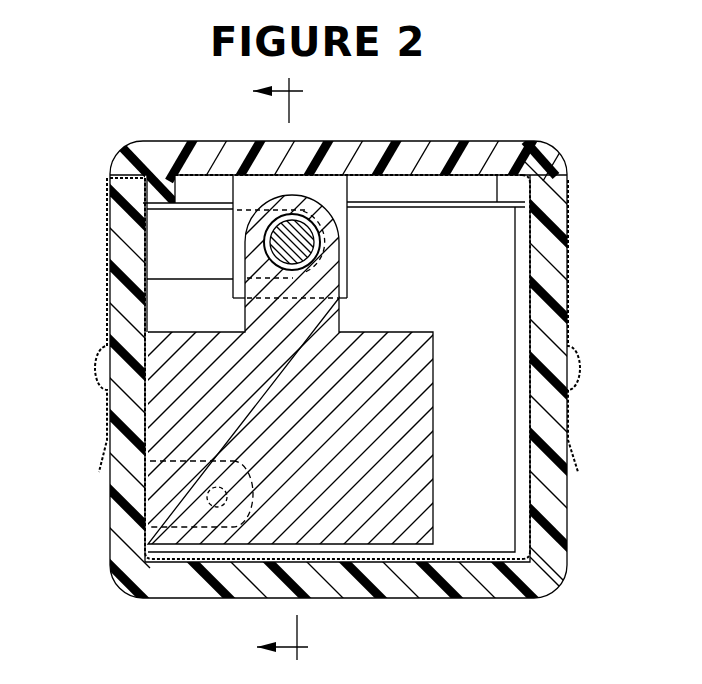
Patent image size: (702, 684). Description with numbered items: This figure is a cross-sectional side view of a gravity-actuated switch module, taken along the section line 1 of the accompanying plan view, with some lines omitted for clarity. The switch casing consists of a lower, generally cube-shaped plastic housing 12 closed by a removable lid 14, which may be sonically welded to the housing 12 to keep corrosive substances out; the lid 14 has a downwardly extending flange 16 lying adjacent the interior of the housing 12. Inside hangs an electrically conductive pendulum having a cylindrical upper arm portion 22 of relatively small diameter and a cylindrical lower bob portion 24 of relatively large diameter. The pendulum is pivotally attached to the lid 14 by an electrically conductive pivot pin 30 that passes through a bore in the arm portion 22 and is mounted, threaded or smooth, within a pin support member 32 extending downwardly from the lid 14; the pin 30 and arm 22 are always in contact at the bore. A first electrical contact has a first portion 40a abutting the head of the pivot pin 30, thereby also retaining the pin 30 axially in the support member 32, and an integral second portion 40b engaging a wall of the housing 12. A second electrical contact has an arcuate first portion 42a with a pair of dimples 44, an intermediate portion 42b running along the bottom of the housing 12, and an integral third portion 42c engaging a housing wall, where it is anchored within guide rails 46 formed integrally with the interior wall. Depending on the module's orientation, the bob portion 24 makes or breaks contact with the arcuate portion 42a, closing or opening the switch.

The section line 1- 1 is at (290, 365).
The housing 12 is at (567, 547).
The lid 14 is at (430, 141).
The flange 16 is at (437, 204).
The arm portion 22 is at (340, 323).
The bob portion 24 is at (434, 417).
The pivot pin 30 is at (308, 256).
The pin support member 32 is at (348, 228).
The first portion of first electrical contact 40a is at (225, 268).
The second portion of first electrical contact 40b is at (148, 233).
The arcuate portion of second electrical contact 42a is at (253, 493).
The intermediate portion of second electrical contact 42b is at (478, 553).
The third portion of second electrical contact 42c is at (529, 307).
The dimples 44 is at (257, 505).
The guide rails 46 is at (514, 255).